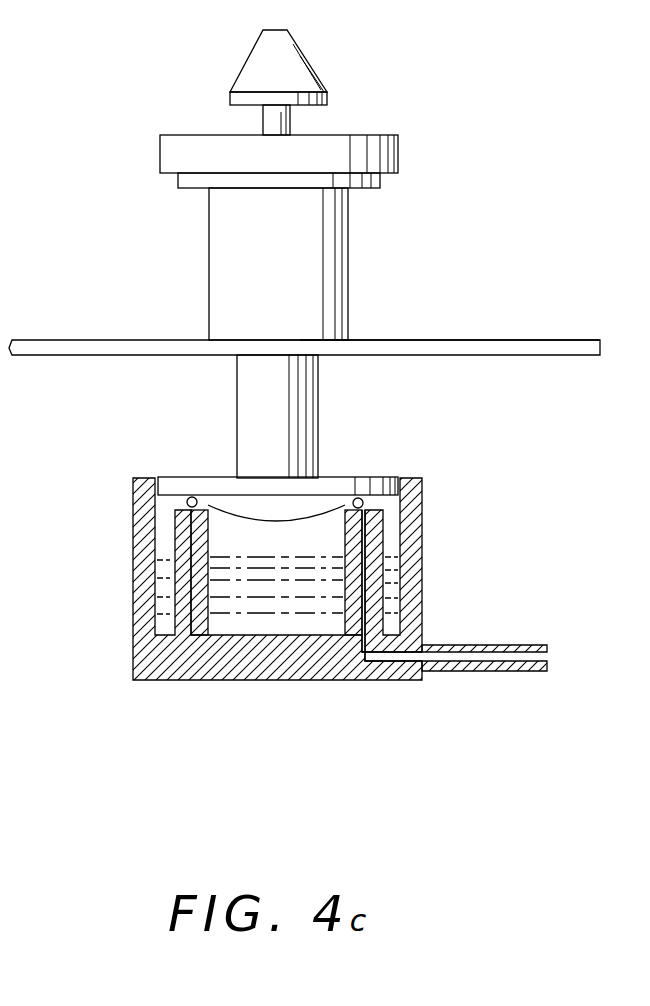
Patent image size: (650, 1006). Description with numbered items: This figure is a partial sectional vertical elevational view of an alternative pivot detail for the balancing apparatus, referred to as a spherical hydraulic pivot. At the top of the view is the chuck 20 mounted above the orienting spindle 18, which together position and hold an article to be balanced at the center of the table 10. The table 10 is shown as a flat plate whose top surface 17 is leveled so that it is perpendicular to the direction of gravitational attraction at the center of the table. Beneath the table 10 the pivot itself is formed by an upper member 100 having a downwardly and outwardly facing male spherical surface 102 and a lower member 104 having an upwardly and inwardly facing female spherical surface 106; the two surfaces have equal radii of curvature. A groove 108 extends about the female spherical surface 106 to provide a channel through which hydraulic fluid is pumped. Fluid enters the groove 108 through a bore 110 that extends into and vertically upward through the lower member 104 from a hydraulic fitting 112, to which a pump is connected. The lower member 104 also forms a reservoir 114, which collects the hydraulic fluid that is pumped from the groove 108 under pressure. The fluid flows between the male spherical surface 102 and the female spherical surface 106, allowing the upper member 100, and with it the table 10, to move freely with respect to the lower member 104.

The table 10 is at (437, 350).
The top surface 17 is at (494, 340).
The orienting spindle 18 is at (443, 193).
The chuck 20 is at (306, 62).
The upper member 100 is at (306, 546).
The male spherical surface 102 is at (368, 503).
The lower member 104 is at (341, 530).
The female spherical surface 106 is at (200, 500).
The groove 108 is at (172, 511).
The bore 110 is at (367, 637).
The hydraulic fitting 112 is at (476, 657).
The reservoir 114 is at (262, 608).